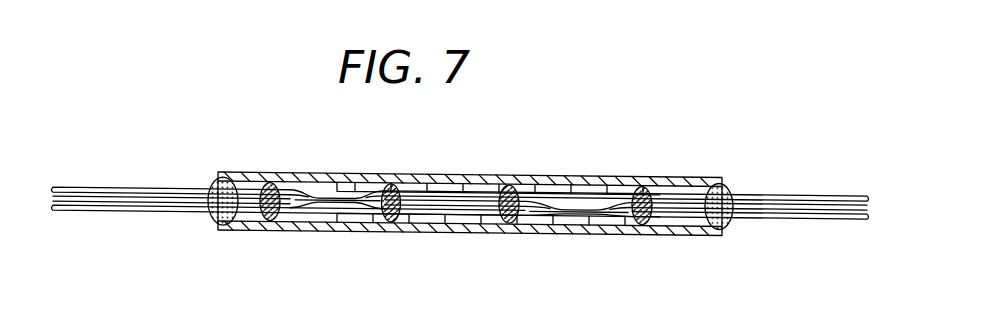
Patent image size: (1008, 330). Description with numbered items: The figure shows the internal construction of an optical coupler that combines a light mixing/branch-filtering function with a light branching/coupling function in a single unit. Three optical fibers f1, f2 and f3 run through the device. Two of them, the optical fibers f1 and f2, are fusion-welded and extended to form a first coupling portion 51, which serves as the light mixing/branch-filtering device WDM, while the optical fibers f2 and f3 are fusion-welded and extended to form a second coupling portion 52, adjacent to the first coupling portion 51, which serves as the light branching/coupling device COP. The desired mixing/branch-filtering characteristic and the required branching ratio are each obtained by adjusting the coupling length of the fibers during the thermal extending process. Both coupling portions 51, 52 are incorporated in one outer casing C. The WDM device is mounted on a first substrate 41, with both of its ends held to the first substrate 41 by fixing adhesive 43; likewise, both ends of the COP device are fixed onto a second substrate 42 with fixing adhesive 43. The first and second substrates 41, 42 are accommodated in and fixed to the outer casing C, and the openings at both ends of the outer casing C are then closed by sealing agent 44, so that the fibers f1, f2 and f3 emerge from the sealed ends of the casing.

The outer casing C is at (591, 176).
The first substrate 41 is at (336, 227).
The second substrate 42 is at (613, 214).
The fixing adhesive 43 is at (258, 173).
The sealing agent 44 is at (733, 181).
The first coupling portion 51 is at (328, 189).
The second coupling portion 52 is at (568, 215).
The optical fiber f1 is at (95, 191).
The optical fiber f2 is at (140, 200).
The optical fiber f3 is at (127, 210).